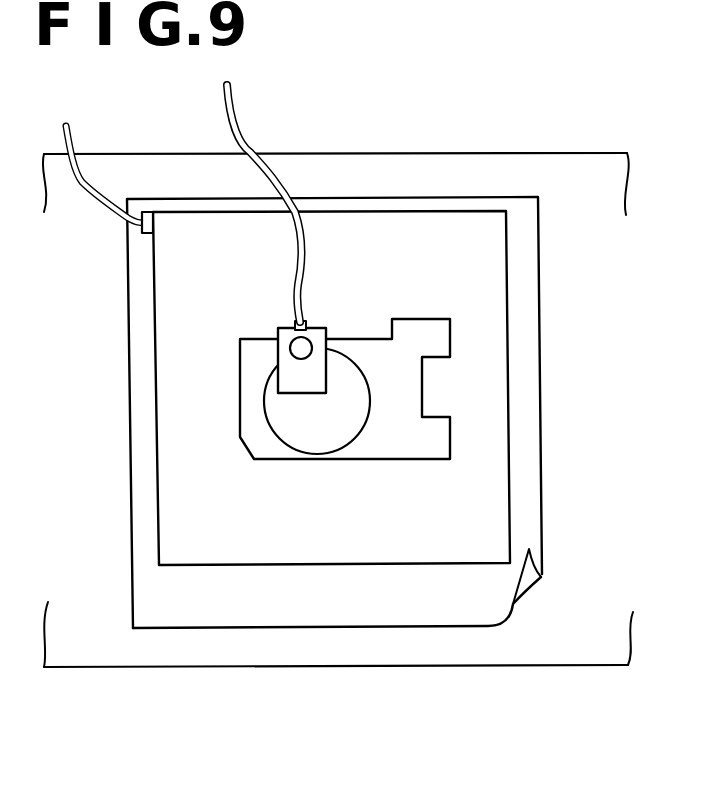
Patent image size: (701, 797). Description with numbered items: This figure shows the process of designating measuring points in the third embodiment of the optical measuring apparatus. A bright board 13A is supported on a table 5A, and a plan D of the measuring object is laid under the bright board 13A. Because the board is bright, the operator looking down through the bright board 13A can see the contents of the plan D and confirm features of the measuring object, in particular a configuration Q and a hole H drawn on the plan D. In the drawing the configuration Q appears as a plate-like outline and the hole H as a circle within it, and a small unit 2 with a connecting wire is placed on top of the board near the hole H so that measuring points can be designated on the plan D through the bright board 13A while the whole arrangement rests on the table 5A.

The table 5A is at (568, 648).
The plan D is at (527, 498).
The bright board 13A is at (448, 226).
The configuration Q is at (270, 461).
The hole H is at (358, 437).
The sensor unit 2 is at (323, 331).